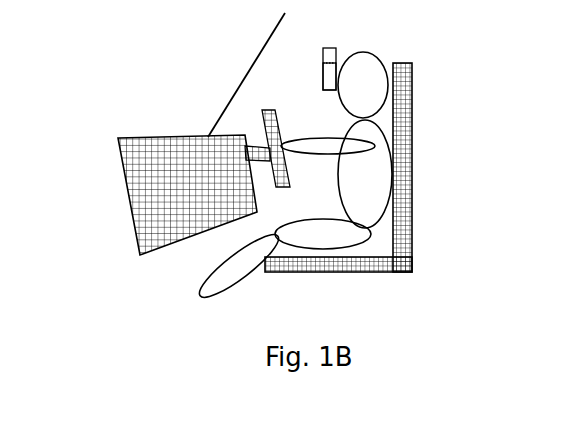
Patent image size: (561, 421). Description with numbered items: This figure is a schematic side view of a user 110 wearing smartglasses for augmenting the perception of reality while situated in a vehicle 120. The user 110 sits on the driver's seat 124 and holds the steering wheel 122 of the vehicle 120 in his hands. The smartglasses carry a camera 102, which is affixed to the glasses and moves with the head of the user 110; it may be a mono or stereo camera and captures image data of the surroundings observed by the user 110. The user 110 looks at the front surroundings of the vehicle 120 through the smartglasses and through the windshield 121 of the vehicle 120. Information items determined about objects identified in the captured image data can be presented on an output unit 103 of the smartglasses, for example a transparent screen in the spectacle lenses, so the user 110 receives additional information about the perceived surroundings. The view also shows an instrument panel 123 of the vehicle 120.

The camera 102 is at (333, 48).
The output unit 103 is at (324, 72).
The user 110 is at (412, 97).
The vehicle 120 is at (80, 112).
The windshield 121 is at (248, 62).
The steering wheel 122 is at (273, 126).
The instrument panel 123 is at (258, 205).
The driver's seat 124 is at (412, 217).